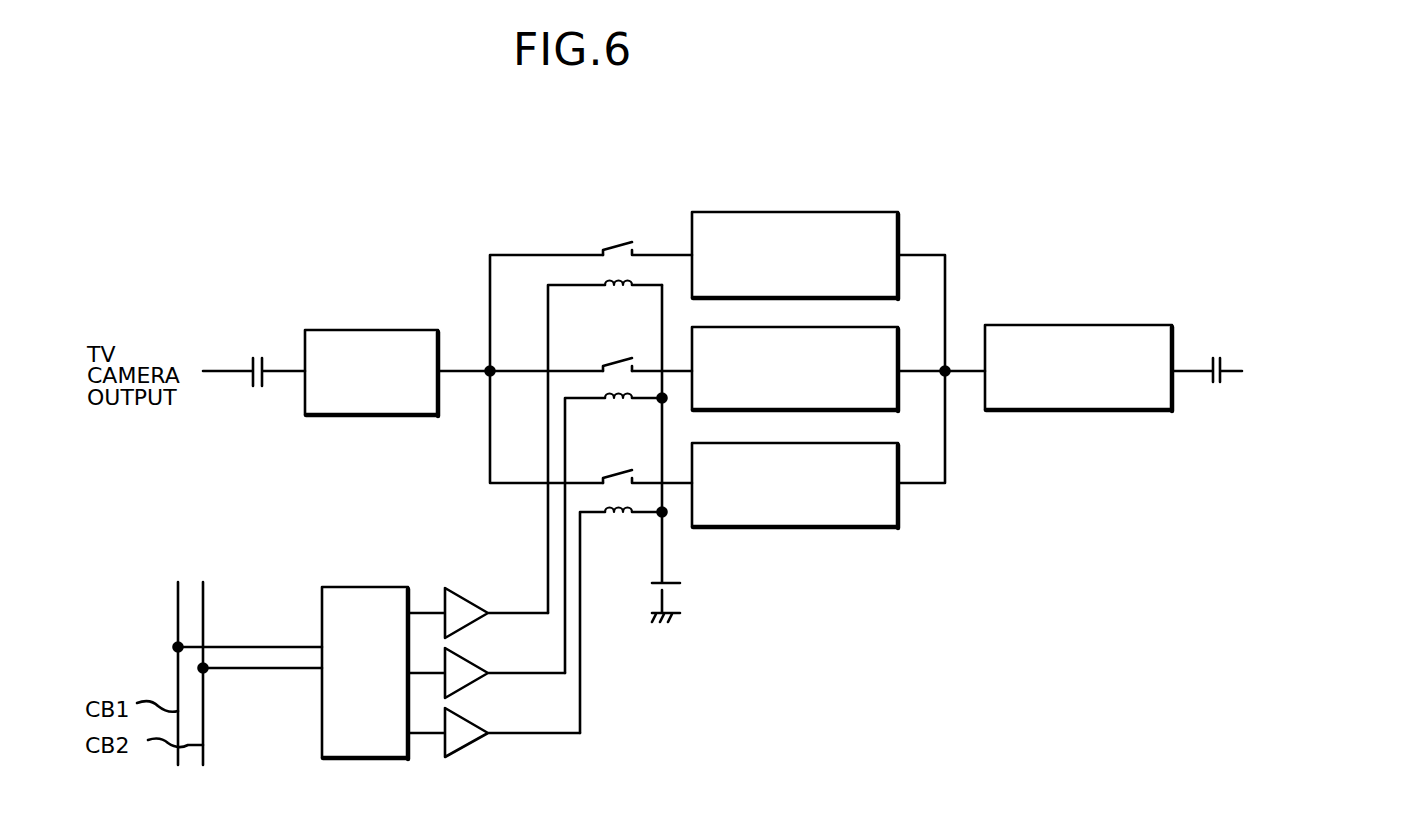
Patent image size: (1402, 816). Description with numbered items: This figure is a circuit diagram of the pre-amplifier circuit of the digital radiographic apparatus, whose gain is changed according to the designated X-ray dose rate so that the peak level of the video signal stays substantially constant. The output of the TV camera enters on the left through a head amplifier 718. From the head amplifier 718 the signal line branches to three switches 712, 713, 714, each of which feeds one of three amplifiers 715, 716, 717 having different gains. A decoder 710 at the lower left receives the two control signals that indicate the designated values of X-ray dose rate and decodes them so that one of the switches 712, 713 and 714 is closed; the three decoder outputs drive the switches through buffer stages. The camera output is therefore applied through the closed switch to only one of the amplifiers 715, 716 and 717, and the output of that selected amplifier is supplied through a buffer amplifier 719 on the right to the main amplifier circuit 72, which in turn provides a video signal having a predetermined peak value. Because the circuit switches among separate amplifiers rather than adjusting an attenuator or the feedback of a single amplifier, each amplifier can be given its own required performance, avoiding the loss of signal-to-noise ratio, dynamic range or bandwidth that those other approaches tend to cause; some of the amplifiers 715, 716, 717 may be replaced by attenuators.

The decoder 710 is at (371, 587).
The switch 712 is at (616, 246).
The switch 713 is at (616, 363).
The switch 714 is at (618, 478).
The amplifier 715 is at (757, 212).
The amplifier 716 is at (898, 392).
The amplifier 717 is at (857, 528).
The head amplifier 718 is at (379, 330).
The buffer amplifier 719 is at (1079, 325).
The main amplifier circuit 72 is at (1281, 357).